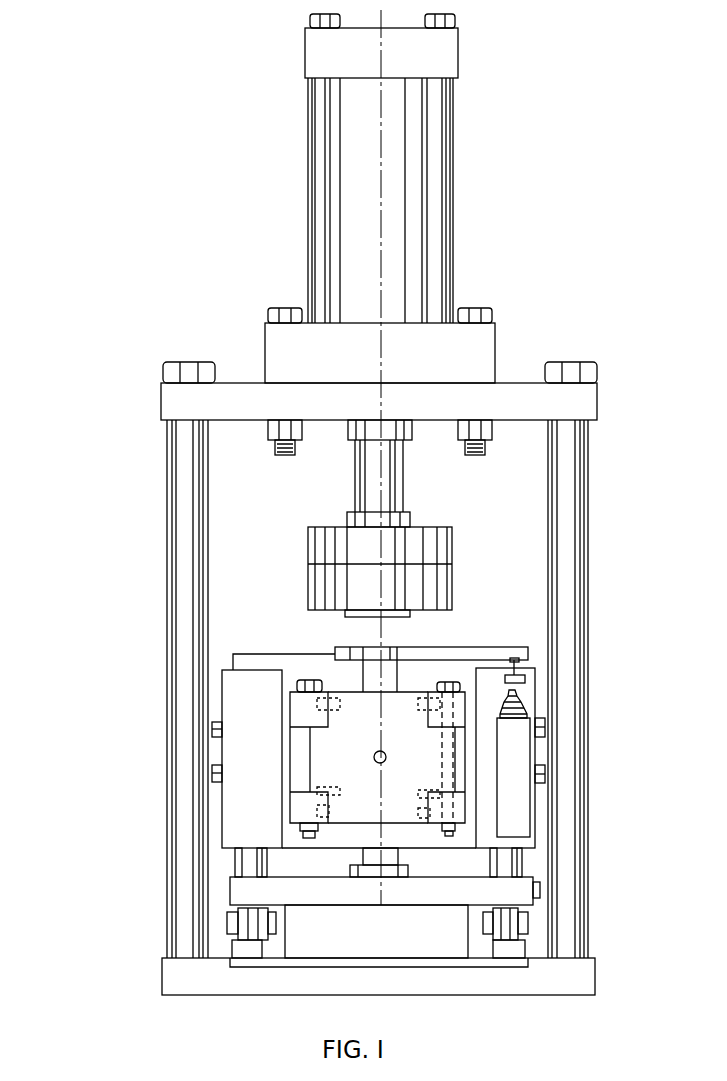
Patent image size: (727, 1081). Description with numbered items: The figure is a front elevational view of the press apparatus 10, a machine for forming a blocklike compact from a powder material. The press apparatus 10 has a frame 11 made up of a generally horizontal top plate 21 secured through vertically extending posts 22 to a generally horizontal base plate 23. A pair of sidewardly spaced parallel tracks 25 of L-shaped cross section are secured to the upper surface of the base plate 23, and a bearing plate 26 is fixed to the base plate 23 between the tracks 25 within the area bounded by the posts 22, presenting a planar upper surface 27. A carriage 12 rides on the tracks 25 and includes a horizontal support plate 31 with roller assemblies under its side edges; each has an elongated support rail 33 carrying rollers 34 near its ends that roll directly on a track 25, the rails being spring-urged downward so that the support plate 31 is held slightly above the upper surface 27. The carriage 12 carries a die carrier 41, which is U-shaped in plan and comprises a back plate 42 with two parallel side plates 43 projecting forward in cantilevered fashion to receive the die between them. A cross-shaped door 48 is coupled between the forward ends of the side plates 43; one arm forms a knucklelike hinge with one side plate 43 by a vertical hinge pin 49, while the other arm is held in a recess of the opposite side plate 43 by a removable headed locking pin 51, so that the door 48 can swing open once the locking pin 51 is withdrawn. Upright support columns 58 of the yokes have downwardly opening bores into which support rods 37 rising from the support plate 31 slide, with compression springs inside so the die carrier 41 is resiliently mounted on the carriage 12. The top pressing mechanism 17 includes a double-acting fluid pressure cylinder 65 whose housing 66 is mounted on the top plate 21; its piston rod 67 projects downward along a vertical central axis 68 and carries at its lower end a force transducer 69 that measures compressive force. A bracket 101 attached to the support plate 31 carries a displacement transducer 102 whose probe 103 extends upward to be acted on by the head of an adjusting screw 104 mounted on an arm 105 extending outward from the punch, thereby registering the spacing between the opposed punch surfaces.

The press apparatus 10 is at (160, 262).
The frame 11 is at (385, 686).
The carriage 12 is at (375, 806).
The top pressing mechanism 17 is at (384, 198).
The top plate 21 is at (588, 398).
The posts 22 is at (187, 583).
The base plate 23 is at (582, 980).
The tracks 25 is at (250, 950).
The bearing plate 26 is at (450, 945).
The upper surface 27 is at (348, 896).
The support plate 31 is at (517, 890).
The support rail 33 is at (522, 930).
The rollers 34 is at (238, 928).
The support rods 37 is at (507, 860).
The die carrier 41 is at (470, 731).
The back plate 42 is at (413, 680).
The side plates 43 is at (305, 812).
The door 48 is at (400, 810).
The hinge pin 49 is at (308, 688).
The locking pin 51 is at (452, 682).
The support columns 58 is at (483, 775).
The fluid pressure cylinder 65 is at (300, 68).
The housing 66 is at (357, 162).
The piston rod 67 is at (369, 481).
The central axis 68 is at (382, 463).
The force transducer 69 is at (440, 545).
The bracket 101 is at (515, 858).
The displacement transducer 102 is at (516, 745).
The probe 103 is at (520, 694).
The adjusting screw 104 is at (527, 673).
The arm 105 is at (462, 660).